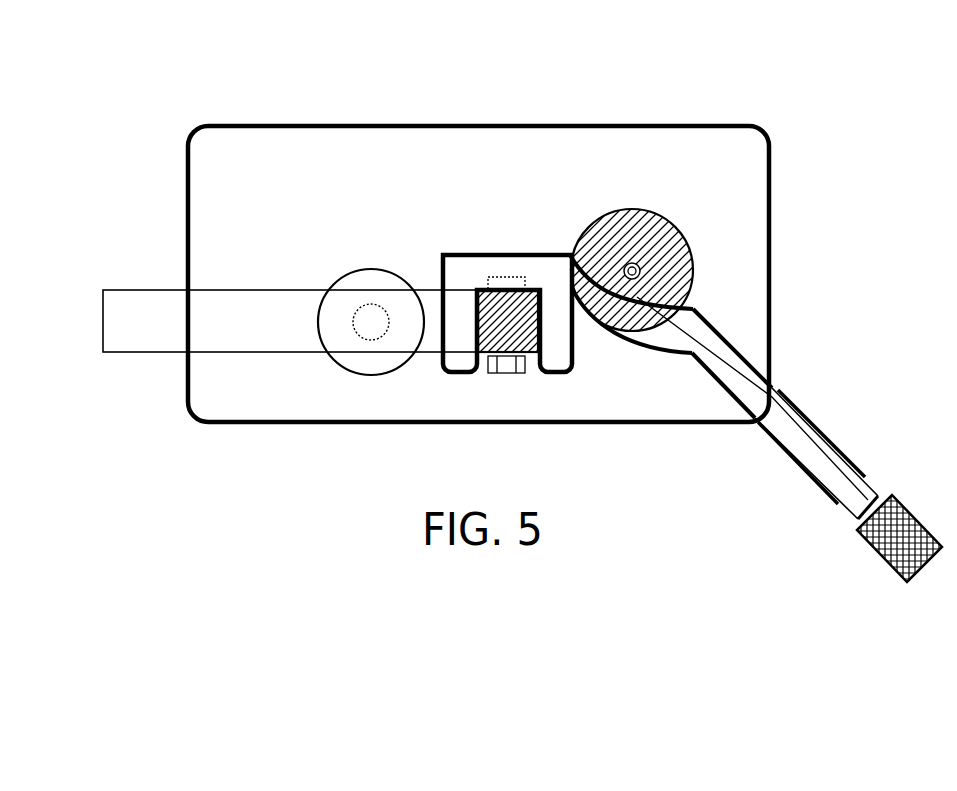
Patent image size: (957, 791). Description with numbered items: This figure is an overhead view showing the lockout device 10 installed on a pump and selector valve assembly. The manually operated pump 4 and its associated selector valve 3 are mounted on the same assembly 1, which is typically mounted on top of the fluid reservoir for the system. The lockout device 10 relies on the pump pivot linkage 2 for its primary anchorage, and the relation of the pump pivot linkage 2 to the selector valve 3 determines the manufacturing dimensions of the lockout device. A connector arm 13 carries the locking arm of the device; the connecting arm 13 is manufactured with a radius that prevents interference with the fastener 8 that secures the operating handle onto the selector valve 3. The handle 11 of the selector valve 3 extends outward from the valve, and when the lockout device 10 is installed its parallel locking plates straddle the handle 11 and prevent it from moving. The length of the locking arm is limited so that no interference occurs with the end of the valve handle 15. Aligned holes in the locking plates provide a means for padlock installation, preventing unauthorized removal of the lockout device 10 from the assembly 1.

The assembly 1 is at (260, 126).
The pump pivot linkage 2 is at (507, 327).
The selector valve 3 is at (618, 235).
The manually operated pump 4 is at (157, 300).
The fastener 8 is at (697, 293).
The lockout device 10 is at (482, 270).
The handle 11 is at (800, 470).
The connector arm 13 is at (680, 333).
The valve handle end 15 is at (925, 513).